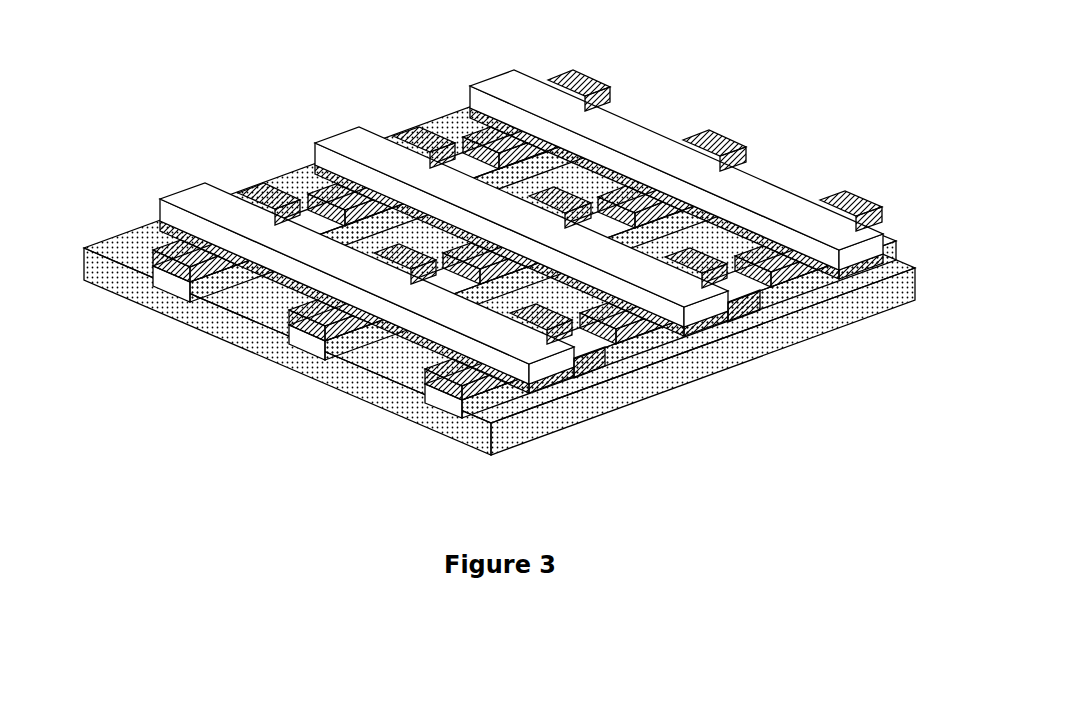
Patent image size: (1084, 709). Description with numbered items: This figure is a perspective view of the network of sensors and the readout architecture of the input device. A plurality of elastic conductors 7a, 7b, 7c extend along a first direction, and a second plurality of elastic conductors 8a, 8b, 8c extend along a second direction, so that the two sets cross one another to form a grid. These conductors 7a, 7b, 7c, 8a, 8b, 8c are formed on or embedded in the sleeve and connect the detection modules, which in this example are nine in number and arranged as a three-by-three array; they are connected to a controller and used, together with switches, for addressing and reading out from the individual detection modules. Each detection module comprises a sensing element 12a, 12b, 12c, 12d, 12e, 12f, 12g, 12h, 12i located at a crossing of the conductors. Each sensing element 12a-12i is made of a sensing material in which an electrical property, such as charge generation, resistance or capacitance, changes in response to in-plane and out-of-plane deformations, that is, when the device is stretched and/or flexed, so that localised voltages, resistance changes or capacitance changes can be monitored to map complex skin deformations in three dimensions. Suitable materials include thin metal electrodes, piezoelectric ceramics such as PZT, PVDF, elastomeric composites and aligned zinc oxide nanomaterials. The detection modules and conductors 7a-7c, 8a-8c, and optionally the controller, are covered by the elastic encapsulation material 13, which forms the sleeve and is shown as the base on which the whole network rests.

The elastic conductor 7a is at (160, 198).
The elastic conductor 7b is at (318, 138).
The elastic conductor 7c is at (490, 74).
The elastic conductor 8a is at (182, 302).
The elastic conductor 8b is at (318, 363).
The elastic conductor 8c is at (462, 420).
The sensing element 12a is at (163, 256).
The sensing element 12b is at (294, 318).
The sensing element 12c is at (430, 376).
The sensing element 12d is at (440, 130).
The sensing element 12e is at (562, 300).
The sensing element 12f is at (722, 322).
The sensing element 12g is at (603, 90).
The sensing element 12h is at (740, 146).
The sensing element 12i is at (880, 203).
The elastic encapsulation material 13 is at (815, 336).